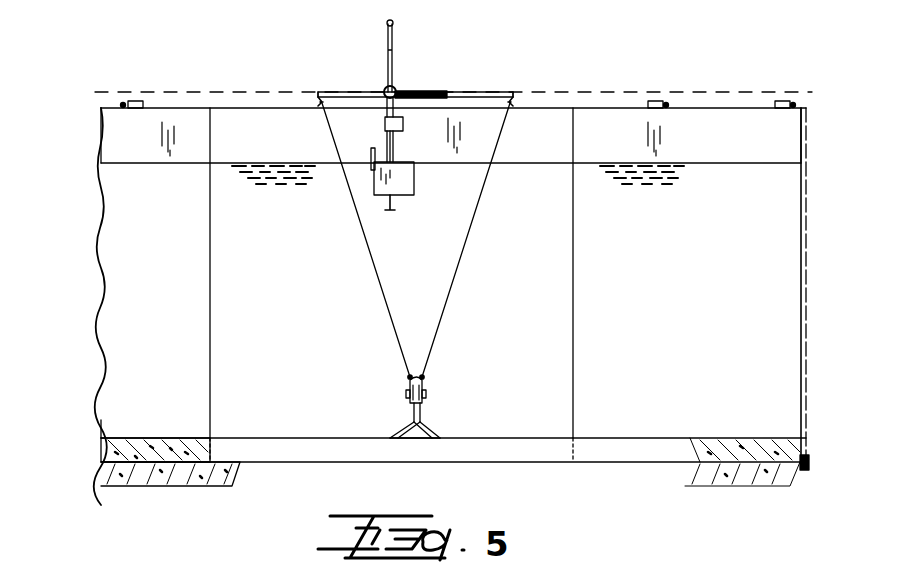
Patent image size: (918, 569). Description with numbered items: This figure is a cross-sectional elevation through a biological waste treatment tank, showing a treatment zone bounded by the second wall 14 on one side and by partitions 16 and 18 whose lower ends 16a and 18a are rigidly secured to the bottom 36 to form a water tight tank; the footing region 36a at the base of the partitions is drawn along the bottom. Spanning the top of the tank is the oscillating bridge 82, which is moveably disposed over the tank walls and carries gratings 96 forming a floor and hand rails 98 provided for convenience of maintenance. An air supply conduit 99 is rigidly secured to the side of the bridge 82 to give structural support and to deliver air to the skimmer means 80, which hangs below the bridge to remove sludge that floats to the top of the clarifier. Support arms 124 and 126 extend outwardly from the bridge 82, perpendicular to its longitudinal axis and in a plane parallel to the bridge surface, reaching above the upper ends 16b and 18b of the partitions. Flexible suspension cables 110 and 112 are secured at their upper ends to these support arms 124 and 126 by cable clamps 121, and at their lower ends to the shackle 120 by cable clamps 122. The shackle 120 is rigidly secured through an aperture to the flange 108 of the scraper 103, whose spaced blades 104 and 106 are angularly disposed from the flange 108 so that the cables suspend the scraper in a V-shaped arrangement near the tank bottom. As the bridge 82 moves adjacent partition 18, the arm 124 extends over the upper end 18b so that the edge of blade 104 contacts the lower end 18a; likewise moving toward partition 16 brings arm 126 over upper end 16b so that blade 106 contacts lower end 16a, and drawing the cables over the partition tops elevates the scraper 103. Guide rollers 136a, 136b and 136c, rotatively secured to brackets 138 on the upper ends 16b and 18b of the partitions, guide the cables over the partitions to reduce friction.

The second wall 14 is at (274, 321).
The partition 16 is at (114, 250).
The lower end of partition 16a is at (102, 436).
The upper end of partition 16b is at (110, 130).
The partition 18 is at (804, 292).
The lower end of partition 18a is at (808, 458).
The upper end of partition 18b is at (794, 122).
The bottom 36 is at (100, 486).
The concrete footing upper portion 36a is at (104, 448).
The skimmer means 80 is at (414, 190).
The oscillating bridge 82 is at (395, 88).
The grating 96 is at (428, 92).
The hand rail 98 is at (394, 40).
The air supply conduit 99 is at (384, 82).
The scraper 103 is at (410, 446).
The blade 104 is at (432, 426).
The blade 106 is at (394, 430).
The flange 108 is at (406, 400).
The cable 110 is at (460, 274).
The cable 112 is at (366, 248).
The shackle 120 is at (426, 392).
The cable clamp 121 is at (320, 104).
The cable clamp 122 is at (424, 374).
The support arm 124 is at (502, 92).
The support arm 126 is at (330, 72).
The roller 136a is at (780, 100).
The roller 136b is at (654, 96).
The roller 136c is at (138, 98).
The bracket 138 is at (122, 104).